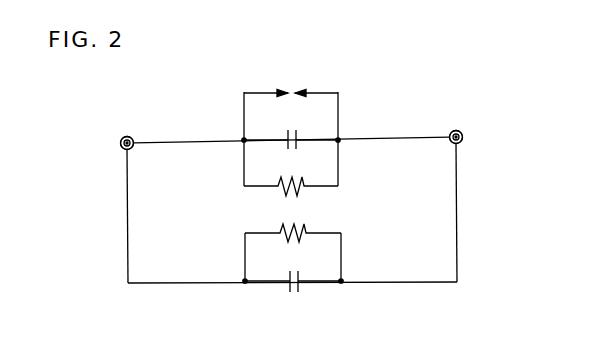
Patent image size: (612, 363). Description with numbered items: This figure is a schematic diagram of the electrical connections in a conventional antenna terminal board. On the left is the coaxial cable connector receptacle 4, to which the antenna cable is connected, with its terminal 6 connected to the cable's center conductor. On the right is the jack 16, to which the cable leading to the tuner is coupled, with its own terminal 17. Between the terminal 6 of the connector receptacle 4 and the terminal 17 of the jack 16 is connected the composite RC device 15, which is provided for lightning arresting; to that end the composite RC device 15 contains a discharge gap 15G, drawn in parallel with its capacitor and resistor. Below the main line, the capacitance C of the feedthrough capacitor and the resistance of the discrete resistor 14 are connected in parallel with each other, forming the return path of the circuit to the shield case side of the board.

The coaxial cable connector receptacle 4 is at (120, 141).
The terminal 6 is at (132, 137).
The discrete resistor 14 is at (304, 228).
The composite RC device 15 is at (321, 122).
The discharge gap 15G is at (299, 80).
The jack 16 is at (461, 132).
The terminal 17 is at (463, 139).
The capacitance C is at (299, 276).